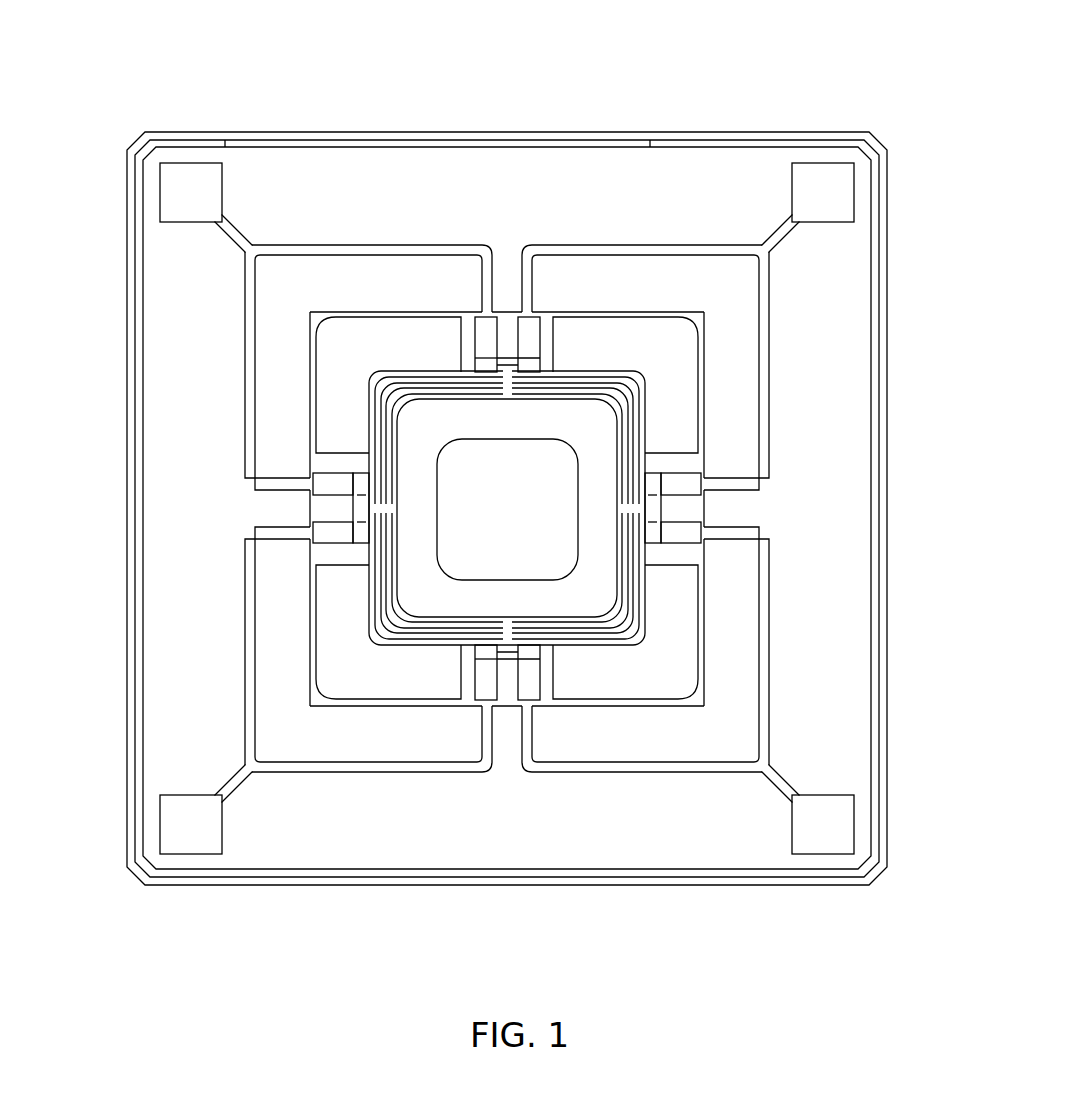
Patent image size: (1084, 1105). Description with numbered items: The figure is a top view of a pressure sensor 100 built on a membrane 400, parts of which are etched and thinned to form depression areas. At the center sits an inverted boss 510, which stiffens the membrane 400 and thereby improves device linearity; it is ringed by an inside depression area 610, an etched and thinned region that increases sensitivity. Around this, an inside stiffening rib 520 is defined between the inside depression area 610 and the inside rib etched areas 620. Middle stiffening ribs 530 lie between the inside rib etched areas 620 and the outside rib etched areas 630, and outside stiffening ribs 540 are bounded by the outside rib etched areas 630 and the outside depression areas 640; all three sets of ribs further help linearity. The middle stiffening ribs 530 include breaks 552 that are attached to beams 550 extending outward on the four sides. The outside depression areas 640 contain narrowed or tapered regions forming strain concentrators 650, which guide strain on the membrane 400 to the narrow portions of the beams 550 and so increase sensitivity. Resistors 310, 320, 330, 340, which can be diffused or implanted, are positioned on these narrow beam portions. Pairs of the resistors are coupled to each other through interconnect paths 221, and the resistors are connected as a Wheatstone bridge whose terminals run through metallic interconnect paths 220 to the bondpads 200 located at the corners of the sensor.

The pressure sensor 100 is at (863, 48).
The bondpads 200 is at (832, 822).
The metallic interconnect paths 220 is at (765, 298).
The interconnect paths 221 is at (508, 652).
The resistor 310 is at (487, 683).
The resistor 320 is at (333, 535).
The resistor 330 is at (527, 336).
The resistor 340 is at (687, 529).
The membrane 400 is at (310, 648).
The inverted boss 510 is at (493, 561).
The inside stiffening rib 520 is at (620, 530).
The middle stiffening ribs 530 is at (633, 573).
The outside stiffening ribs 540 is at (643, 608).
The beams 550 is at (670, 510).
The breaks 552 is at (387, 508).
The inside depression area 610 is at (583, 598).
The inside rib etched areas 620 is at (387, 570).
The outside rib etched areas 630 is at (388, 630).
The outside depression areas 640 is at (262, 380).
The strain concentrators 650 is at (452, 330).